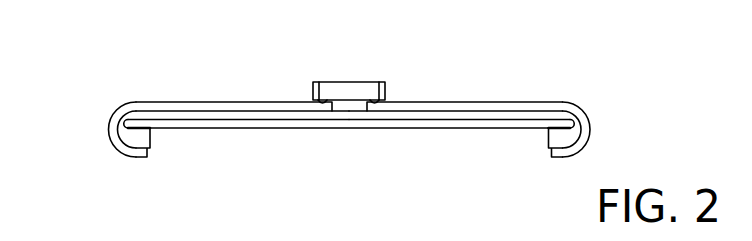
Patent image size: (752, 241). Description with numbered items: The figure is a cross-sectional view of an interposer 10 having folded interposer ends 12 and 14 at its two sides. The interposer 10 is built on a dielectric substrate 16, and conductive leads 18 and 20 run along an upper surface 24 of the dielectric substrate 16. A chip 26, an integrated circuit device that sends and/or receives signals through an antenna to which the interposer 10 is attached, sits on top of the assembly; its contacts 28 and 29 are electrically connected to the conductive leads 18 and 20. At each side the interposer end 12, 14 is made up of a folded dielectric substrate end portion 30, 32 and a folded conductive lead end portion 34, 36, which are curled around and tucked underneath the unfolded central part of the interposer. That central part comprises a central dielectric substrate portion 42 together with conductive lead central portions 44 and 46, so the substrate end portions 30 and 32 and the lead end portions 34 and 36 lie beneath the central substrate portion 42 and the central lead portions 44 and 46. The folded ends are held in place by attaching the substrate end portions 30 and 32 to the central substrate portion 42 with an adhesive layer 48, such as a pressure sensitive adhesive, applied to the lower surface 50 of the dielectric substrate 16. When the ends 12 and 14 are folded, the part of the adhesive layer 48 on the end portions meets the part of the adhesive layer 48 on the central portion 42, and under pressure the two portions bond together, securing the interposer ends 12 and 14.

The interposer 10 is at (89, 60).
The folded interposer end 12 is at (70, 96).
The folded interposer end 14 is at (599, 67).
The dielectric substrate 16 is at (408, 115).
The conductive lead 18 is at (189, 64).
The conductive lead 20 is at (505, 62).
The upper surface 24 is at (227, 112).
The chip 26 is at (350, 83).
The contact 28 is at (322, 100).
The contact 29 is at (377, 100).
The folded dielectric substrate end portion 30 is at (123, 137).
The folded dielectric substrate end portion 32 is at (567, 143).
The folded conductive lead end portion 34 is at (133, 157).
The folded conductive lead end portion 36 is at (560, 157).
The central dielectric substrate portion 42 is at (275, 115).
The conductive lead central portion 44 is at (173, 102).
The conductive lead central portion 46 is at (515, 102).
The adhesive layer 48 is at (457, 132).
The lower surface 50 is at (422, 127).